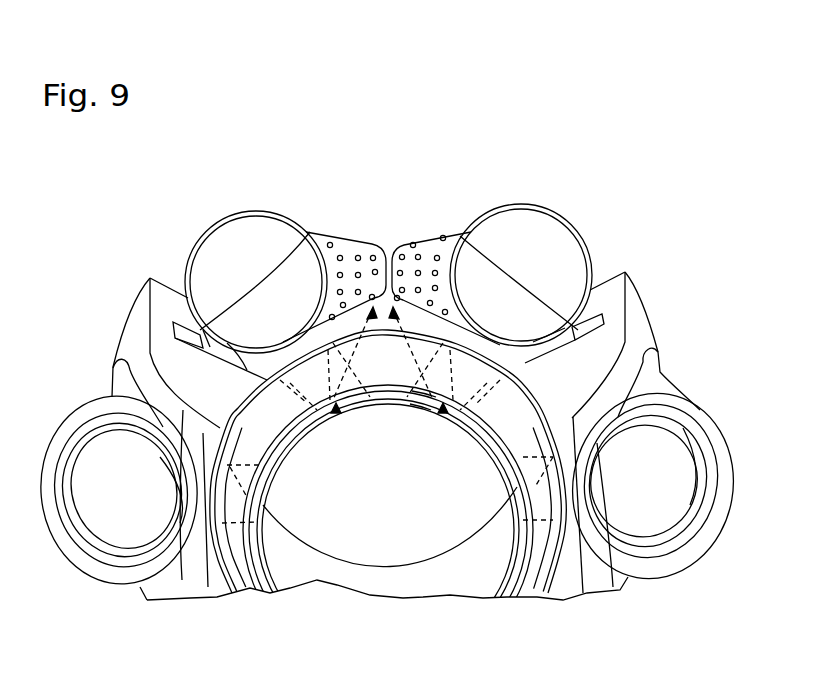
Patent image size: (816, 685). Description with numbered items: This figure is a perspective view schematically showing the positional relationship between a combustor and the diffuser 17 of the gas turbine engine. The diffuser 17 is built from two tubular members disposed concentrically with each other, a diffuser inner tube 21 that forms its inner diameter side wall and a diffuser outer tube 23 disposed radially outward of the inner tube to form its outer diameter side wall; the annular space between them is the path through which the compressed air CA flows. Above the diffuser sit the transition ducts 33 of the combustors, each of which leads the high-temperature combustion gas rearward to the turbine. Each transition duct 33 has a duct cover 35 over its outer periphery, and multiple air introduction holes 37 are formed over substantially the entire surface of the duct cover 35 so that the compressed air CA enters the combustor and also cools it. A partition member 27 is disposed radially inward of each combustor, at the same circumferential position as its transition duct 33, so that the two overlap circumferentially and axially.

The diffuser 17 is at (281, 465).
The diffuser inner tube 21 is at (422, 400).
The diffuser outer tube 23 is at (431, 410).
The partition member 27 is at (336, 410).
The transition duct 33 is at (233, 267).
The duct cover 35 is at (300, 228).
The air introduction holes 37 is at (342, 257).
The compressed air CA is at (390, 378).